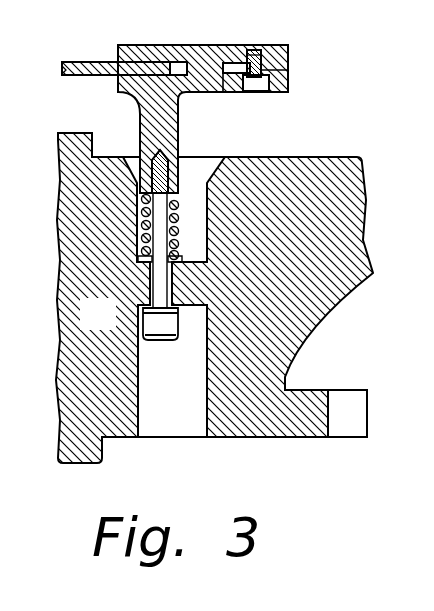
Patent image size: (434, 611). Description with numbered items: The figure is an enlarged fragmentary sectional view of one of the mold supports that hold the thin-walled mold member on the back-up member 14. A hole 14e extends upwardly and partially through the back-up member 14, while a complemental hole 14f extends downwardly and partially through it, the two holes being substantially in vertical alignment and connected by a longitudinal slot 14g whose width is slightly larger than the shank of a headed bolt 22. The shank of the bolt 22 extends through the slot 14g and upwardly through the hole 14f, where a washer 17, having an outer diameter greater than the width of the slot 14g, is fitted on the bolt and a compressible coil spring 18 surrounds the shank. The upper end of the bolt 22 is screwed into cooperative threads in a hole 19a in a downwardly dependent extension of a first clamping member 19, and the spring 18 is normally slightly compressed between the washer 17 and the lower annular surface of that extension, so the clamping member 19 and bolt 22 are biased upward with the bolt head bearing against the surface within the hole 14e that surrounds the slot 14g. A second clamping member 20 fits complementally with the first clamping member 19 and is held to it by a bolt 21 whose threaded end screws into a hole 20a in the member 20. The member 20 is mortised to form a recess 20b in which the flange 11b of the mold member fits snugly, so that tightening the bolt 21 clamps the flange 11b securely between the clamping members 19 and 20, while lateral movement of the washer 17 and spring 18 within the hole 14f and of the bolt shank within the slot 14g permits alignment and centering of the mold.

The annular flange portion 11b is at (84, 62).
The back-up member 14 is at (112, 327).
The hole 14e is at (198, 437).
The complemental hole 14f is at (206, 208).
The longitudinal slot 14g is at (207, 288).
The washer 17 is at (183, 263).
The compressible coil spring 18 is at (182, 237).
The first clamping member 19 is at (292, 78).
The threaded hole 19a is at (180, 183).
The second clamping member 20 is at (202, 52).
The threaded hole 20a is at (270, 50).
The recess 20b is at (141, 66).
The bolt 21 is at (257, 84).
The headed bolt 22 is at (165, 334).